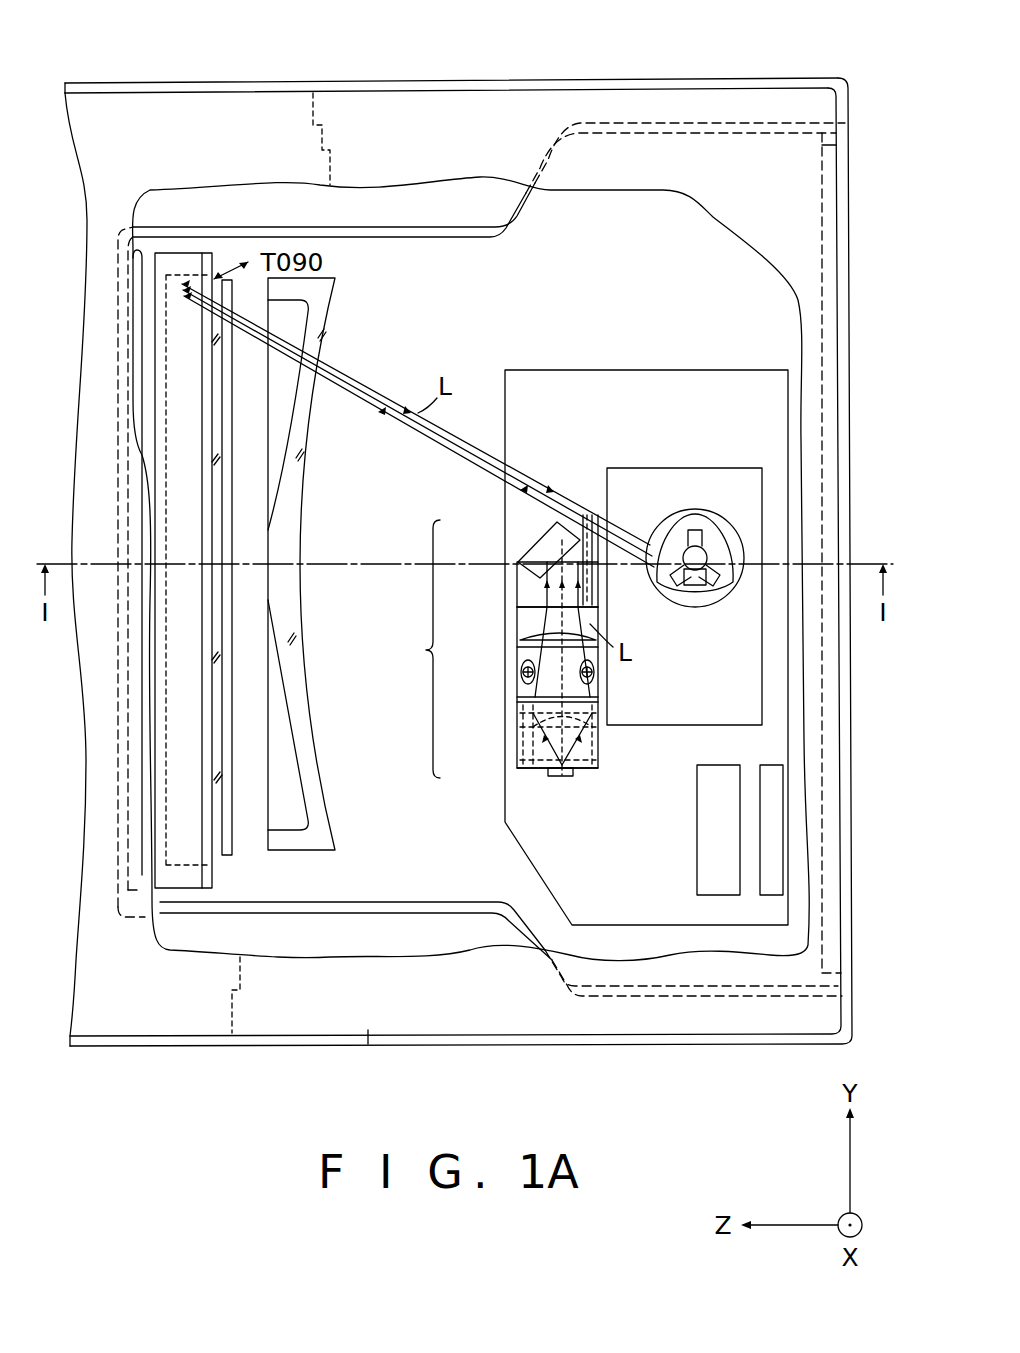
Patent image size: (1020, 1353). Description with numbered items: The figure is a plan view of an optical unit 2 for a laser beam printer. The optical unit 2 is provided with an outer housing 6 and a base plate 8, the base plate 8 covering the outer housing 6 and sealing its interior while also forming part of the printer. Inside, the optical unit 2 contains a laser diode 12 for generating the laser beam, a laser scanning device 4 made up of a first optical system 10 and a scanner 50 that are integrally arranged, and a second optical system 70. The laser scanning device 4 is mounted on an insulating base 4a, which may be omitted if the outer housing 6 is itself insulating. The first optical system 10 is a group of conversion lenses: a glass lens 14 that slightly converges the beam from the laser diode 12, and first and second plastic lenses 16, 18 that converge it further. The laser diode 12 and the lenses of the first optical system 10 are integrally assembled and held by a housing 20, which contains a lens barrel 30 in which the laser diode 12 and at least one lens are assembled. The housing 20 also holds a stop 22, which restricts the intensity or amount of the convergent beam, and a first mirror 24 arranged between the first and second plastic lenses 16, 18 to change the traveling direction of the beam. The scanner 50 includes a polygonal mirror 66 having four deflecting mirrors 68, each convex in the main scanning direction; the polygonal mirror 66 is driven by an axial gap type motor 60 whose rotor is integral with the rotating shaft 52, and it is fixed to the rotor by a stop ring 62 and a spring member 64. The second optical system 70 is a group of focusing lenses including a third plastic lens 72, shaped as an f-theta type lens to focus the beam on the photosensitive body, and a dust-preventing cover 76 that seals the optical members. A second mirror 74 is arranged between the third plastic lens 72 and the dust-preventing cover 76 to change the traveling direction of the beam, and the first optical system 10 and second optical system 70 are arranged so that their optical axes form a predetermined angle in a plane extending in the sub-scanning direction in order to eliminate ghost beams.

The optical unit 2 is at (848, 78).
The base plate 8 is at (478, 81).
The second optical system 70 is at (242, 233).
The outer housing 6 is at (196, 913).
The second mirror 74 is at (170, 893).
The dust-preventing cover 76 is at (224, 861).
The third plastic lens 72 is at (318, 853).
The laser scanning device 4 is at (553, 369).
The insulating base 4a is at (622, 392).
The scanner 50 is at (668, 468).
The axial gap type motor 60 is at (663, 521).
The rotating shaft 52 is at (693, 544).
The deflecting mirror 68 is at (724, 521).
The spring member 64 is at (667, 586).
The polygonal mirror 66 is at (690, 594).
The stop ring 62 is at (723, 592).
The first optical system 10 is at (426, 650).
The first mirror 24 is at (518, 580).
The second plastic lens 18 is at (588, 520).
The housing 20 is at (540, 608).
The first plastic lens 16 is at (540, 637).
The stop 22 is at (524, 677).
The lens barrel 30 is at (528, 738).
The glass lens 14 is at (540, 746).
The laser diode 12 is at (562, 777).